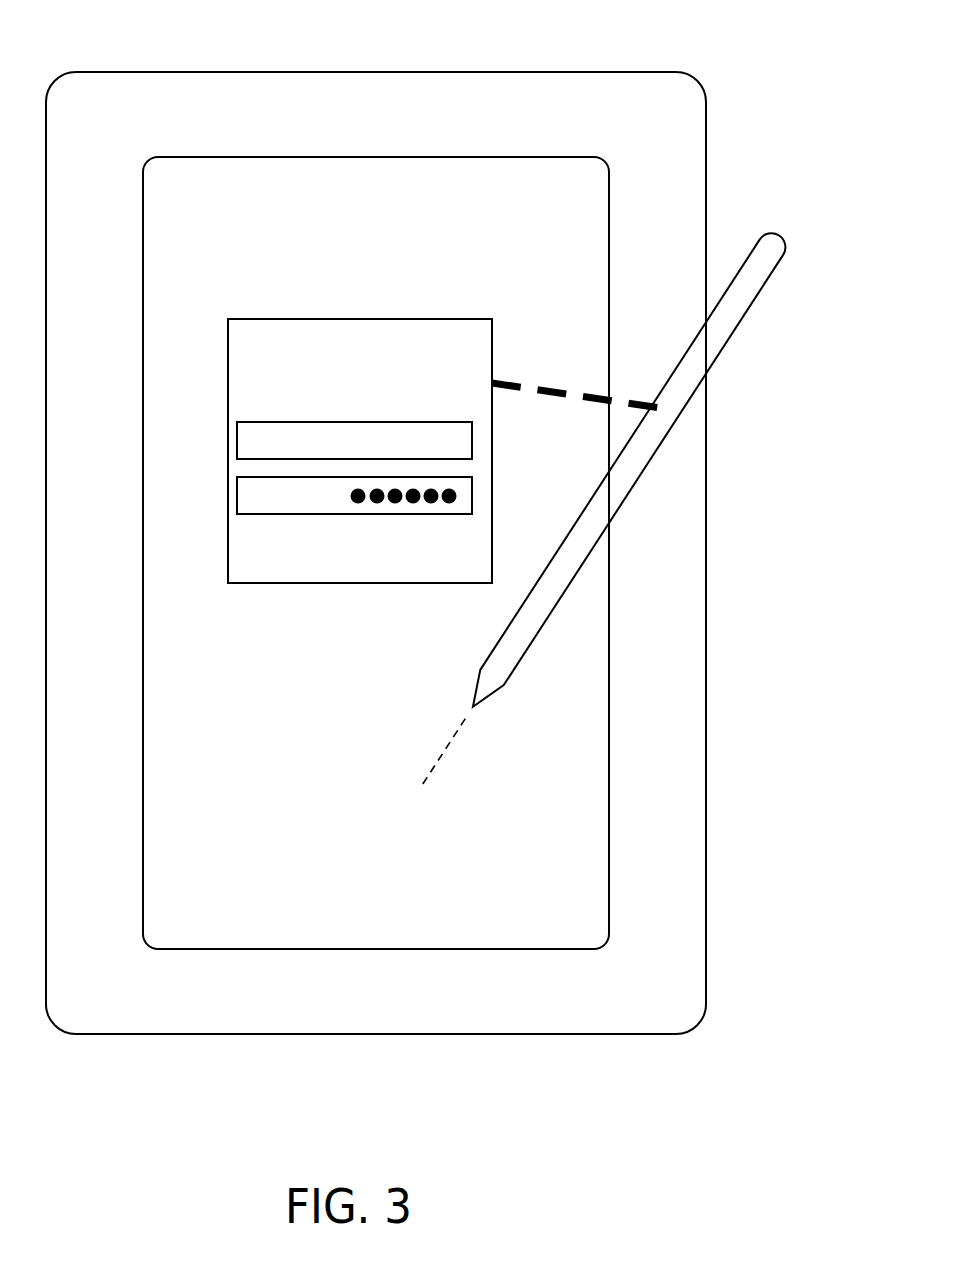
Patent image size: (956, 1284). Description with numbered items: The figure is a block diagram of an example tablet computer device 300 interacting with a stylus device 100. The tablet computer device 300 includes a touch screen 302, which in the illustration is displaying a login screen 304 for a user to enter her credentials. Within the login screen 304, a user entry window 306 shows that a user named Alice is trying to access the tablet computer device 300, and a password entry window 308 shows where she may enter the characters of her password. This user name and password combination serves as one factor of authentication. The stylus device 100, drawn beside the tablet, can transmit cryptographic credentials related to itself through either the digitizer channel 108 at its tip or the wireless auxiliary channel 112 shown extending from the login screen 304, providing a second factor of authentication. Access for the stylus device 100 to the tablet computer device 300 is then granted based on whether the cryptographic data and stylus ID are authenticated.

The stylus device 100 is at (748, 308).
The digitizer channel 108 is at (447, 743).
The wireless auxiliary channel 112 is at (510, 381).
The tablet computer device 300 is at (220, 72).
The touch screen 302 is at (272, 157).
The login screen 304 is at (315, 319).
The user entry window 306 is at (237, 438).
The password entry window 308 is at (237, 493).